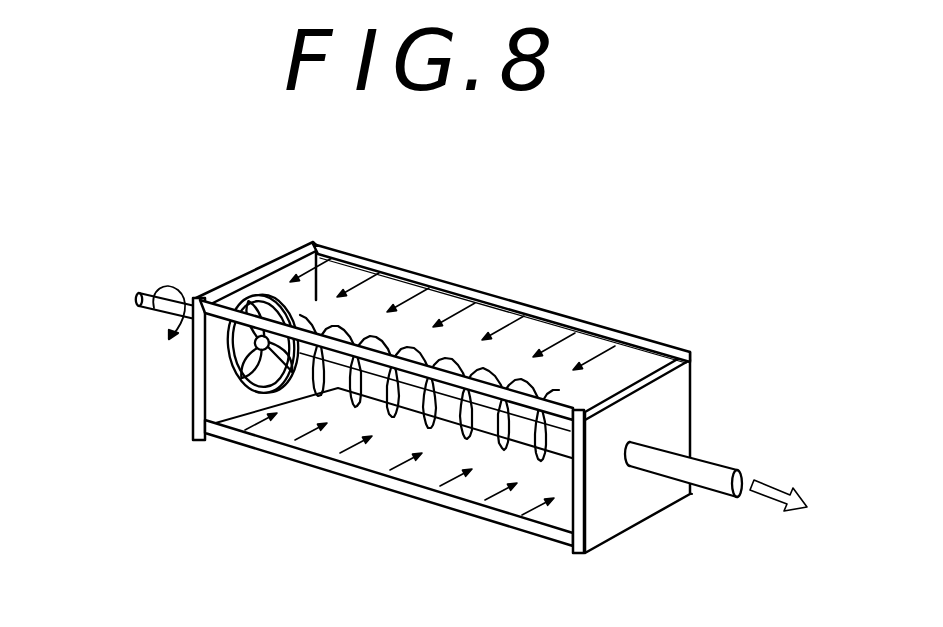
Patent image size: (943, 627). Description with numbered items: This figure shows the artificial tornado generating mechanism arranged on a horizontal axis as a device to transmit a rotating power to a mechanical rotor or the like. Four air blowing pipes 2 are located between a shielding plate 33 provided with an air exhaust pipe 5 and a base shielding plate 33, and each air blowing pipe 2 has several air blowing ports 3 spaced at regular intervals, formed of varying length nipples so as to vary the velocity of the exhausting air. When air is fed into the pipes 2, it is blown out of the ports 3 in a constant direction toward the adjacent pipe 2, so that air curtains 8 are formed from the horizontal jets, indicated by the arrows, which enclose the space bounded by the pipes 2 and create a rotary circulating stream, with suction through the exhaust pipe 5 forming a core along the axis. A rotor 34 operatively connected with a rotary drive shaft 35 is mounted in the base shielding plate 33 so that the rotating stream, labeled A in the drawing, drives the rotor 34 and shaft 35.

The air blowing pipe 2 is at (597, 332).
The air blowing port 3 is at (525, 313).
The air suction outlet pipe 5 is at (712, 485).
The air curtain 8 is at (460, 292).
The shielding plate 33 is at (277, 258).
The rotor 34 is at (250, 370).
The rotary drive shaft 35 is at (147, 310).
The screw conveyor A is at (460, 427).